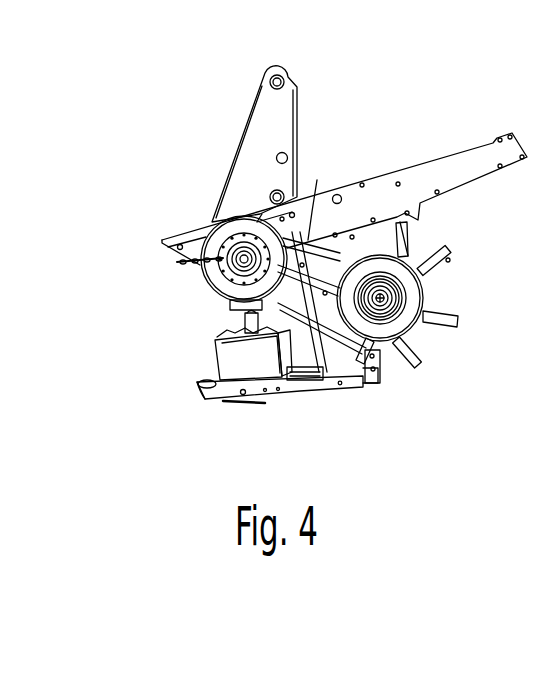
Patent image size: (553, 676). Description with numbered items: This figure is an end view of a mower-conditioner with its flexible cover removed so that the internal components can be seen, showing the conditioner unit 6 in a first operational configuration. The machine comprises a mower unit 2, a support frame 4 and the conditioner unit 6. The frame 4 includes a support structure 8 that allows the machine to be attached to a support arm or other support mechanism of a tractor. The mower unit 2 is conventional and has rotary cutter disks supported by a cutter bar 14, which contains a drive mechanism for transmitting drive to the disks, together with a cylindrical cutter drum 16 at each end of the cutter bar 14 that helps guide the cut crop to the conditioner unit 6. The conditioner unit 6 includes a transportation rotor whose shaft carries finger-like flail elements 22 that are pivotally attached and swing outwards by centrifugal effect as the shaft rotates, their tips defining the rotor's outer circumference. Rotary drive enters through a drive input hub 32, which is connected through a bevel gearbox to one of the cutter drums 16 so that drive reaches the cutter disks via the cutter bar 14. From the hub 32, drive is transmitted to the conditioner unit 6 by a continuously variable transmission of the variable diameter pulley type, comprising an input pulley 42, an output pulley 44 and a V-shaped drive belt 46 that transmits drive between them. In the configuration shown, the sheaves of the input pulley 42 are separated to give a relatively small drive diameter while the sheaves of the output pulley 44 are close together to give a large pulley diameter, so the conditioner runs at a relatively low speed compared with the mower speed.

The mower unit 2 is at (146, 365).
The support frame 4 is at (447, 165).
The conditioner unit 6 is at (472, 226).
The support structure 8 is at (257, 133).
The cutter bar 14 is at (256, 396).
The cylindrical cutter drum 16 is at (228, 355).
The flail elements 22 is at (414, 362).
The drive input hub 32 is at (222, 242).
The input pulley 42 is at (212, 282).
The output pulley 44 is at (410, 303).
The V-shaped drive belt 46 is at (308, 237).